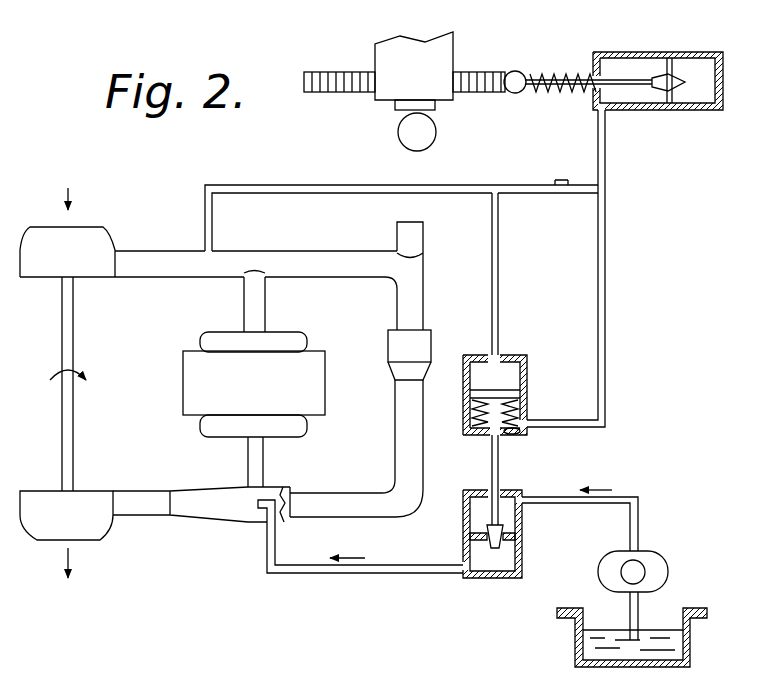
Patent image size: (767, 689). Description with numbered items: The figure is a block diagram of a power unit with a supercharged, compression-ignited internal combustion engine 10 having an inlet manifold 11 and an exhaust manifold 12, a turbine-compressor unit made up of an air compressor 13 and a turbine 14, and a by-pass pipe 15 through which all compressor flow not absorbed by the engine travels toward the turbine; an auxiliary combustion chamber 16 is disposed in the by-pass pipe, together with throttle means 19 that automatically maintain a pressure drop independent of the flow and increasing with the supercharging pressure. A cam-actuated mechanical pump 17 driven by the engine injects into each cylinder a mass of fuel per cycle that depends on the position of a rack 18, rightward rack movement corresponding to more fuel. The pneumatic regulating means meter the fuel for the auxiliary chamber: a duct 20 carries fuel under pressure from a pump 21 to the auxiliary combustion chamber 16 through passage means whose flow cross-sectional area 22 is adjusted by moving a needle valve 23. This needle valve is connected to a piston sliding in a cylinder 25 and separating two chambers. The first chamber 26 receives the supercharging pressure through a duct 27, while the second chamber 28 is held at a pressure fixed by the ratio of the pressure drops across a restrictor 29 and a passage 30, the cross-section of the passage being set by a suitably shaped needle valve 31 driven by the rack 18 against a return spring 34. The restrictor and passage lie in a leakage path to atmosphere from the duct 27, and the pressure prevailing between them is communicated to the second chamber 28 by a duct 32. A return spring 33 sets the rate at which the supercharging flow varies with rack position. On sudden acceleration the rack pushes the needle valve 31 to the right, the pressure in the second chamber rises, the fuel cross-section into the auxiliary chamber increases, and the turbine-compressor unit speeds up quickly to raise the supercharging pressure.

The internal combustion engine 10 is at (268, 394).
The inlet manifold 11 is at (275, 345).
The exhaust manifold 12 is at (282, 427).
The air compressor 13 is at (85, 253).
The turbine 14 is at (75, 505).
The by-pass pipe 15 is at (283, 251).
The auxiliary combustion chamber 16 is at (244, 524).
The cam-actuated mechanical pump 17 is at (370, 52).
The rack 18 is at (315, 93).
The throttle means 19 is at (428, 327).
The duct 20 is at (370, 573).
The pump 21 is at (668, 568).
The flow cross-sectional area 22 is at (505, 535).
The needle valve 23 is at (498, 548).
The cylinder 25 is at (505, 356).
The first chamber 26 is at (502, 375).
The duct 27 is at (340, 176).
The second chamber 28 is at (478, 428).
The restrictor 29 is at (562, 195).
The passage 30 is at (672, 76).
The needle valve 31 is at (660, 77).
The duct 32 is at (605, 275).
The return spring 33 is at (521, 433).
The return spring 34 is at (549, 93).